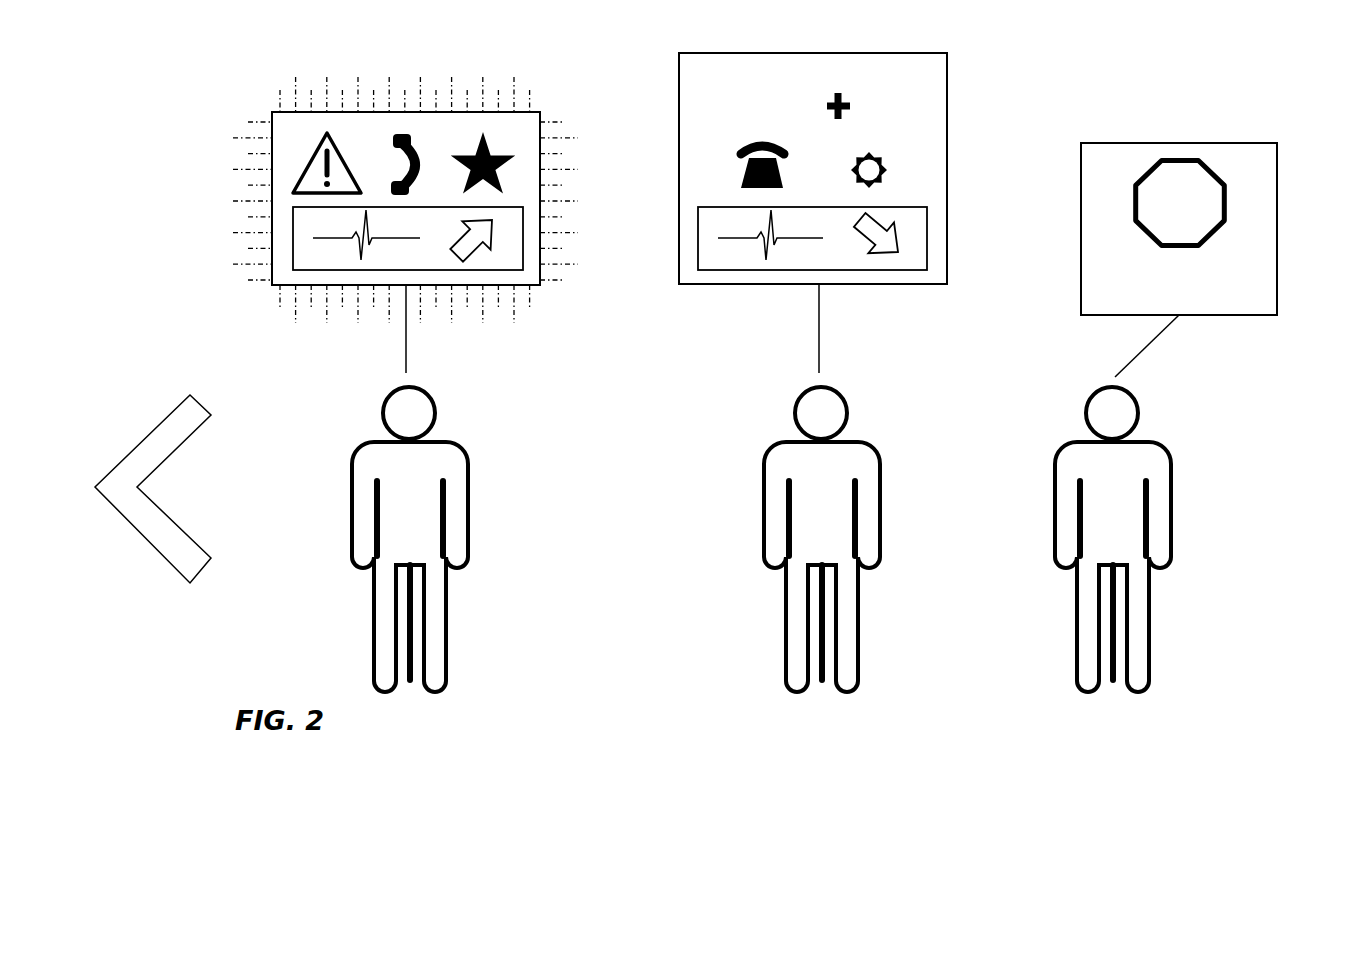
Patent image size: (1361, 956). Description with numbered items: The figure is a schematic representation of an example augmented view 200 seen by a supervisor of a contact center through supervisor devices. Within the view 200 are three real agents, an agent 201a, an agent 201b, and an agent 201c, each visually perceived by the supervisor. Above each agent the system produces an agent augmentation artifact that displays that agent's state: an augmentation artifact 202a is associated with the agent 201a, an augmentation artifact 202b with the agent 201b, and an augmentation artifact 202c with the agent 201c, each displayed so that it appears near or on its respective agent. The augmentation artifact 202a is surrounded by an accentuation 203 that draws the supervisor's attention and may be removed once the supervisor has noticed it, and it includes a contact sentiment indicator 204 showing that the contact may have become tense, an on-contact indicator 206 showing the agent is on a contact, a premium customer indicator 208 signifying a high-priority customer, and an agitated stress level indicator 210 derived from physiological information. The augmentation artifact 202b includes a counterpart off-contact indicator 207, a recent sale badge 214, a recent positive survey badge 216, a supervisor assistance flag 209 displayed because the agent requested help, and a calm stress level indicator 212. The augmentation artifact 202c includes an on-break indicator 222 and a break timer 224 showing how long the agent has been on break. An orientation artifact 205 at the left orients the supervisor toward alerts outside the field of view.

The augmented view 200 is at (186, 83).
The agent 201a is at (478, 428).
The agent 201b is at (890, 428).
The agent 201c is at (1190, 428).
The agent augmentation artifact 202a is at (541, 110).
The agent augmentation artifact 202b is at (950, 51).
The agent augmentation artifact 202c is at (1279, 140).
The accentuation 203 is at (263, 306).
The contact sentiment indicator 204 is at (313, 161).
The orientation artifact 205 is at (156, 498).
The on-contact indicator 206 is at (402, 133).
The off-contact indicator 207 is at (738, 163).
The premium customer indicator 208 is at (507, 157).
The supervisor assistance flag 209 is at (884, 156).
The agitated stress level indicator 210 is at (293, 233).
The calm stress level indicator 212 is at (698, 228).
The recent sale badge 214 is at (787, 83).
The recent positive survey badge 216 is at (837, 91).
The on-break indicator 222 is at (1134, 187).
The break timer 224 is at (1135, 273).